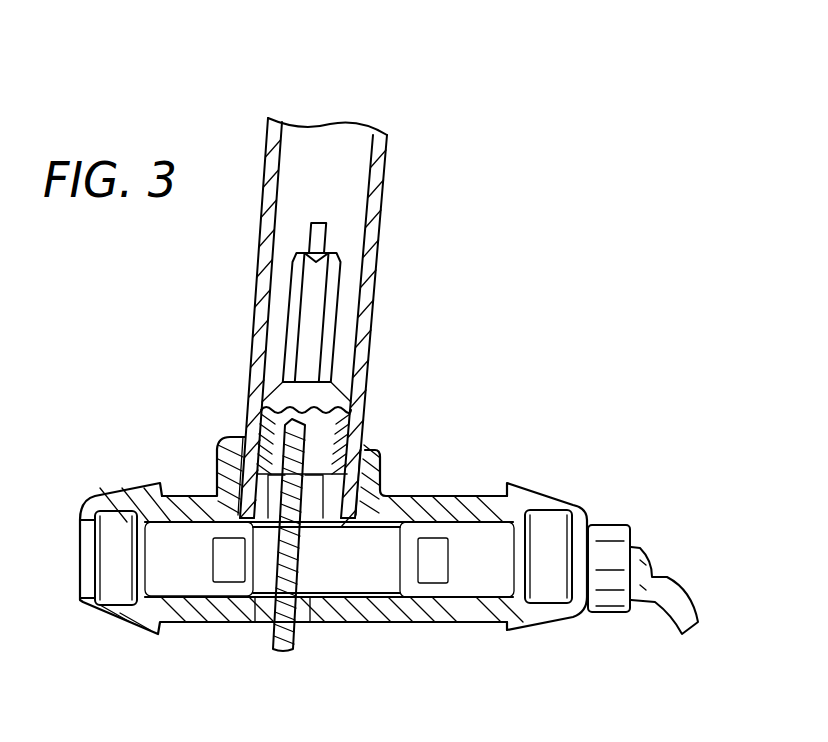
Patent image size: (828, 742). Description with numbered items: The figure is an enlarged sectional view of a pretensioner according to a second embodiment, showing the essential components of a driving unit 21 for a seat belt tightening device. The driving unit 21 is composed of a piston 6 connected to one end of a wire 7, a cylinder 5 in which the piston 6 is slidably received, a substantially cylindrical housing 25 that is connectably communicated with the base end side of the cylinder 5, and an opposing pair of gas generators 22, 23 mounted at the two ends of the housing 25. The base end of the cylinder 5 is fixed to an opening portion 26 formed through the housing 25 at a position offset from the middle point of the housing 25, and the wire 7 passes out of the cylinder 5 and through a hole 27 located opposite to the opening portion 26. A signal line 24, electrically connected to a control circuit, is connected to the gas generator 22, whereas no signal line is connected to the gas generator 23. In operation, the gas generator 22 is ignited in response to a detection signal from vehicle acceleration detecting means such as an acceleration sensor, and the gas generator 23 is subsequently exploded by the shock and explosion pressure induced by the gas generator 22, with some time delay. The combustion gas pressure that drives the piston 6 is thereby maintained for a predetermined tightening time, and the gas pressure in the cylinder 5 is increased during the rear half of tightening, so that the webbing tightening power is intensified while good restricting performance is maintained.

The cylinder 5 is at (383, 207).
The piston 6 is at (310, 311).
The wire 7 is at (295, 640).
The driving unit 21 is at (385, 428).
The gas generator 22 is at (545, 548).
The gas generator 23 is at (180, 552).
The signal line 24 is at (676, 578).
The housing 25 is at (424, 606).
The opening portion 26 is at (318, 527).
The hole 27 is at (270, 618).